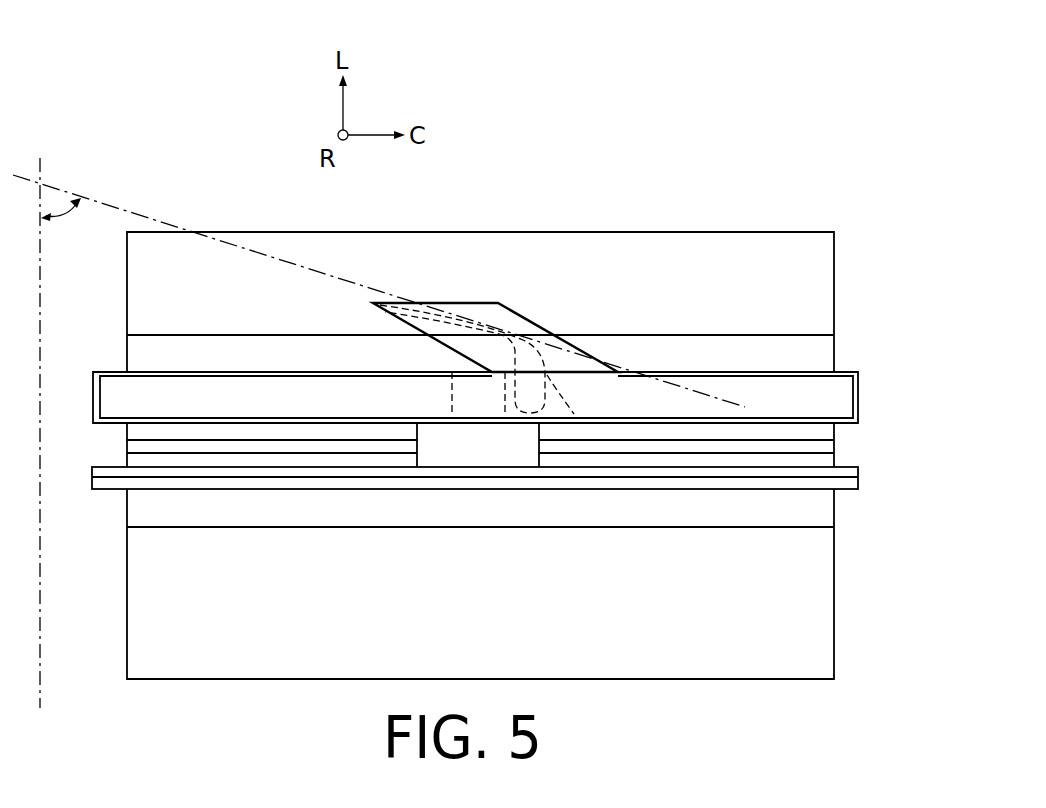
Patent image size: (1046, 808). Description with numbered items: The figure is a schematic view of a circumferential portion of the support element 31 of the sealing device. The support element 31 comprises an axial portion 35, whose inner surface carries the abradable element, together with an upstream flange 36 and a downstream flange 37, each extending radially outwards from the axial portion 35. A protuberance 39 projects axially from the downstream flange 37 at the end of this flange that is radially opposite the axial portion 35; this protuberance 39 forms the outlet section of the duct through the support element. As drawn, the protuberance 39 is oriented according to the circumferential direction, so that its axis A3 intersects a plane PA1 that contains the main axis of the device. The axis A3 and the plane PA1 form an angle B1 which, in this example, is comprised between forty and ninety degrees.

The support element 31 is at (846, 217).
The axial portion 35 is at (810, 633).
The upstream flange 36 is at (858, 488).
The downstream flange 37 is at (860, 395).
The protuberance 39 is at (532, 327).
The axis A3 is at (105, 203).
The angle B1 is at (68, 225).
The plane PA1 is at (40, 622).